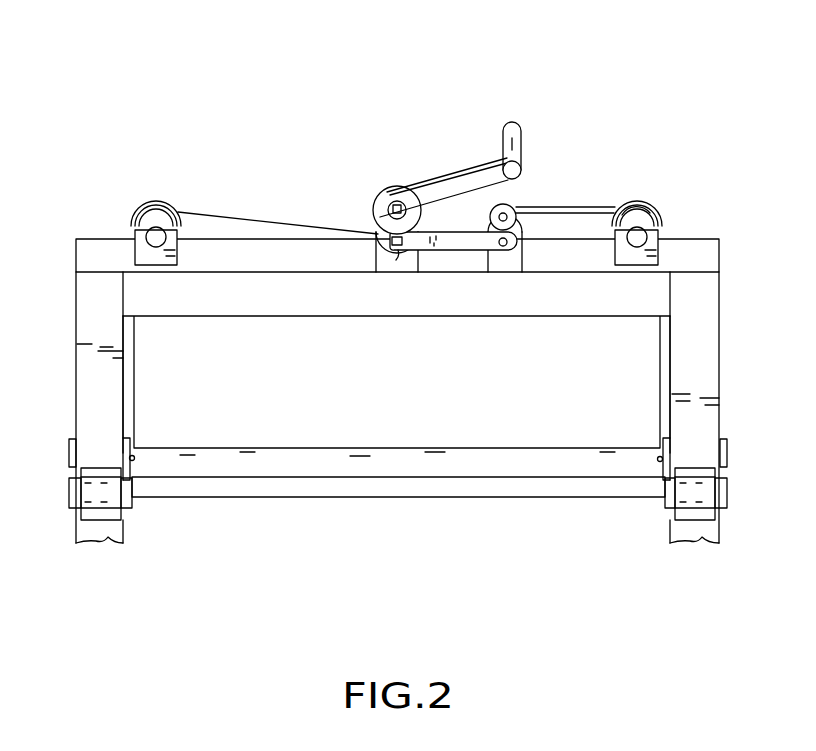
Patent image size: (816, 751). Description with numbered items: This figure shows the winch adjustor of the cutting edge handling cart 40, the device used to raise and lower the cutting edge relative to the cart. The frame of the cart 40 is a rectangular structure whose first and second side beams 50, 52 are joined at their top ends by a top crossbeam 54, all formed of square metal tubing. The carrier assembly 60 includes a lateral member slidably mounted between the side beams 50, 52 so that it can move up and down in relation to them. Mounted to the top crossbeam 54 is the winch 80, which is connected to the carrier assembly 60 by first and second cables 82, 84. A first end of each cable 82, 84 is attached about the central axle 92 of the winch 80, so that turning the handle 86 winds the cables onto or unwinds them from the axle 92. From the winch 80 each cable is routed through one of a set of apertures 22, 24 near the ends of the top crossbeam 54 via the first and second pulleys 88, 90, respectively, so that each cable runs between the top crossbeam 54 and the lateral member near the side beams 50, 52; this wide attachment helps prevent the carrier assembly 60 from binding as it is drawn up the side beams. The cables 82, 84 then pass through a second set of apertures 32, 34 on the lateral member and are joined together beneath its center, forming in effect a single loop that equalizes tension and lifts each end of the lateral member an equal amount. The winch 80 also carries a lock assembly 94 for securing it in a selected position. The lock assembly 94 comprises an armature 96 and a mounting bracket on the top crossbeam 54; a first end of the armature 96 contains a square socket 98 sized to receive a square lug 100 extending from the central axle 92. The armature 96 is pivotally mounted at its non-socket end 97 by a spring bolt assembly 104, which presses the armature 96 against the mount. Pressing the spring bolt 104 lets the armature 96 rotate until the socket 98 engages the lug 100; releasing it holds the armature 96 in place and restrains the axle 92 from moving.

The cart 40 is at (275, 110).
The aperture 22 is at (663, 258).
The aperture 24 is at (130, 256).
The aperture 32 is at (660, 459).
The aperture 34 is at (132, 458).
The first side beam 50 is at (706, 385).
The second side beam 52 is at (88, 370).
The top crossbeam 54 is at (243, 298).
The carrier assembly 60 is at (406, 490).
The winch 80 is at (386, 190).
The first cable 82 is at (595, 207).
The second cable 84 is at (205, 212).
The handle 86 is at (523, 126).
The first pulley 88 is at (649, 200).
The second pulley 90 is at (154, 199).
The central axle 92 is at (380, 224).
The lock assembly 94 is at (541, 273).
The armature 96 is at (452, 266).
The non-socket end 97 is at (501, 273).
The square socket 98 is at (398, 257).
The square lug 100 is at (392, 244).
The spring bolt assembly 104 is at (513, 208).